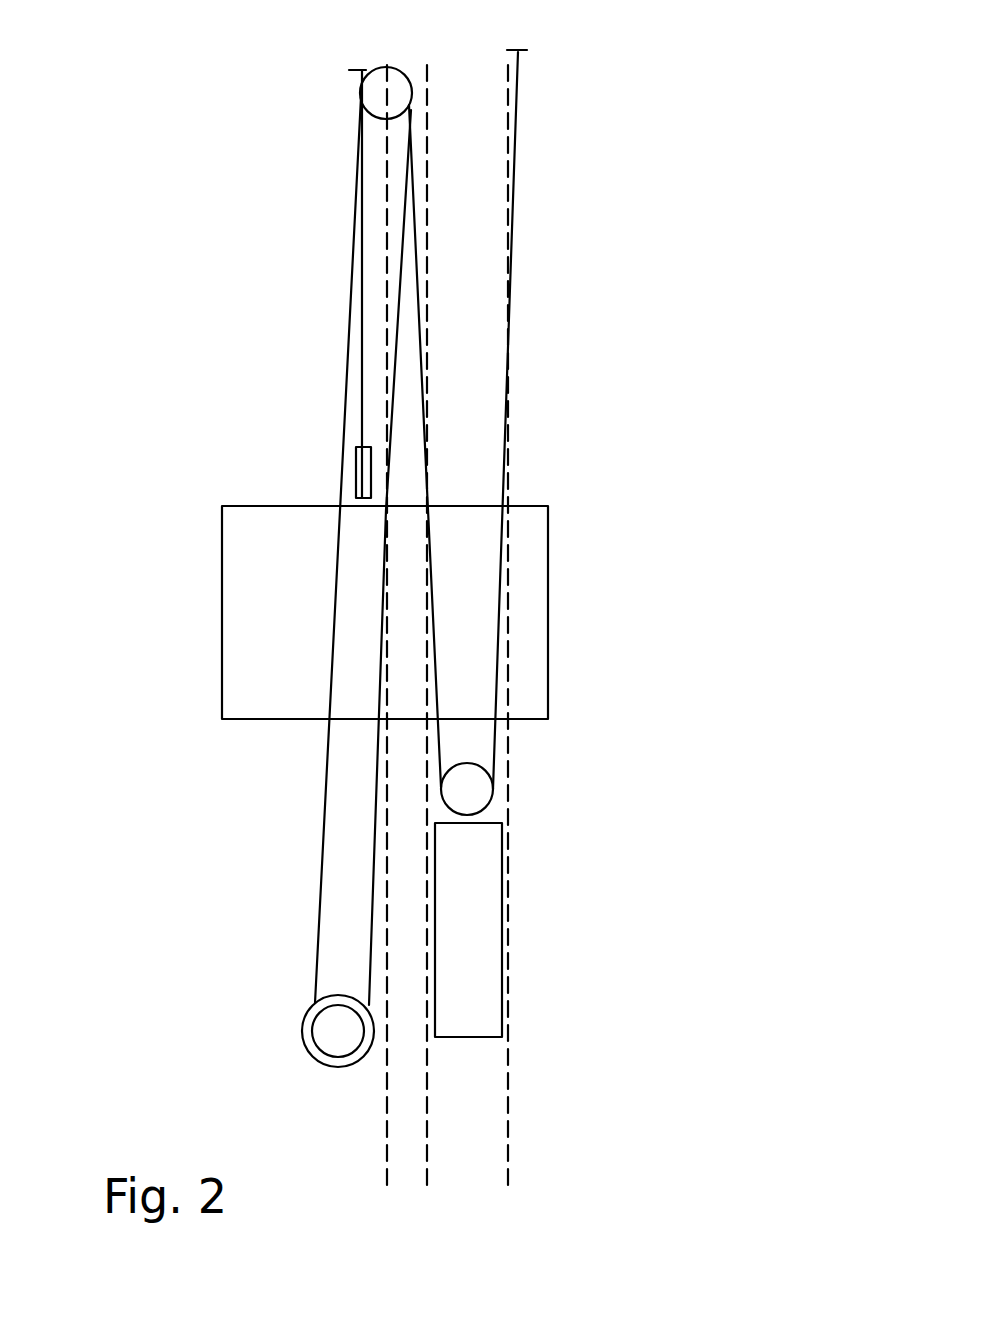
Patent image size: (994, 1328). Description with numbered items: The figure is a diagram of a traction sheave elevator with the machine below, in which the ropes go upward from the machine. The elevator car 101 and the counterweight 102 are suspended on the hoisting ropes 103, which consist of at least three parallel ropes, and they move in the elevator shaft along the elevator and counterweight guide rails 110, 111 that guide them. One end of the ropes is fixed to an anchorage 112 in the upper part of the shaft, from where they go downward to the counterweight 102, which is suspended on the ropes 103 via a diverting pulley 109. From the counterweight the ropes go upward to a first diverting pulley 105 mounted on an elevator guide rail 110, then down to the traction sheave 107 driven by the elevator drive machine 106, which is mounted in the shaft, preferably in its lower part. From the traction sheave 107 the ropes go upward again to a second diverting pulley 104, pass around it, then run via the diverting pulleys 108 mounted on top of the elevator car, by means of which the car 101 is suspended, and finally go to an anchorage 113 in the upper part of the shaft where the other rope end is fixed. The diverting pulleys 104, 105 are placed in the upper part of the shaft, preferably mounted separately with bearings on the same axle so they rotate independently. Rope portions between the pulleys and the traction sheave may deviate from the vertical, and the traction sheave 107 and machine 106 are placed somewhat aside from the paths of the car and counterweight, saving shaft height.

The elevator car 101 is at (255, 642).
The counterweight 102 is at (477, 917).
The hoisting ropes 103 is at (345, 410).
The second diverting pulley 104 is at (261, 78).
The first diverting pulley 105 is at (378, 72).
The elevator drive machine 106 is at (268, 944).
The traction sheave 107 is at (327, 1022).
The diverting pulleys 108 is at (355, 478).
The diverting pulley 109 is at (470, 793).
The elevator guide rail 110 is at (387, 1152).
The counterweight guide rails 111 is at (425, 1112).
The anchorage 112 is at (520, 49).
The anchorage 113 is at (355, 70).